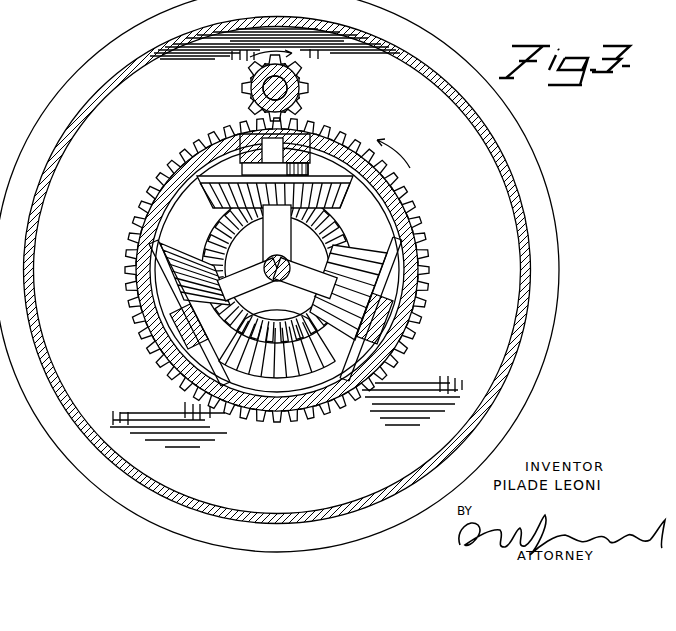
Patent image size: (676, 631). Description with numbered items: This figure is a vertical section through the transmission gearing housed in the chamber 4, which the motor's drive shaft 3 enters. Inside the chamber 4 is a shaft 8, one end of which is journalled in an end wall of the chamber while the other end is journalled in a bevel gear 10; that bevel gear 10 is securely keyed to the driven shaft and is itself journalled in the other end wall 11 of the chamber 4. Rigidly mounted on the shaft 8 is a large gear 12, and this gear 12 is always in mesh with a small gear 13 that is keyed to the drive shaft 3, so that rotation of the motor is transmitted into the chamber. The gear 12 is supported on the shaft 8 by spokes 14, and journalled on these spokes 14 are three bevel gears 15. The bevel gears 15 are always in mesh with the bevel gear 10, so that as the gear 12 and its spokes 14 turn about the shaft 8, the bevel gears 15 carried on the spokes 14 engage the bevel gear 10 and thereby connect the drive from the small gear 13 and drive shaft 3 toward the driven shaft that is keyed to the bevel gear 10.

The drive shaft 3 is at (243, 91).
The chamber 4 is at (35, 242).
The shaft 8 is at (287, 263).
The bevel gear 10 is at (340, 220).
The end wall 11 is at (415, 150).
The gear 12 is at (410, 207).
The small gear 13 is at (305, 83).
The spokes 14 is at (270, 232).
The bevel gears 15 is at (172, 242).